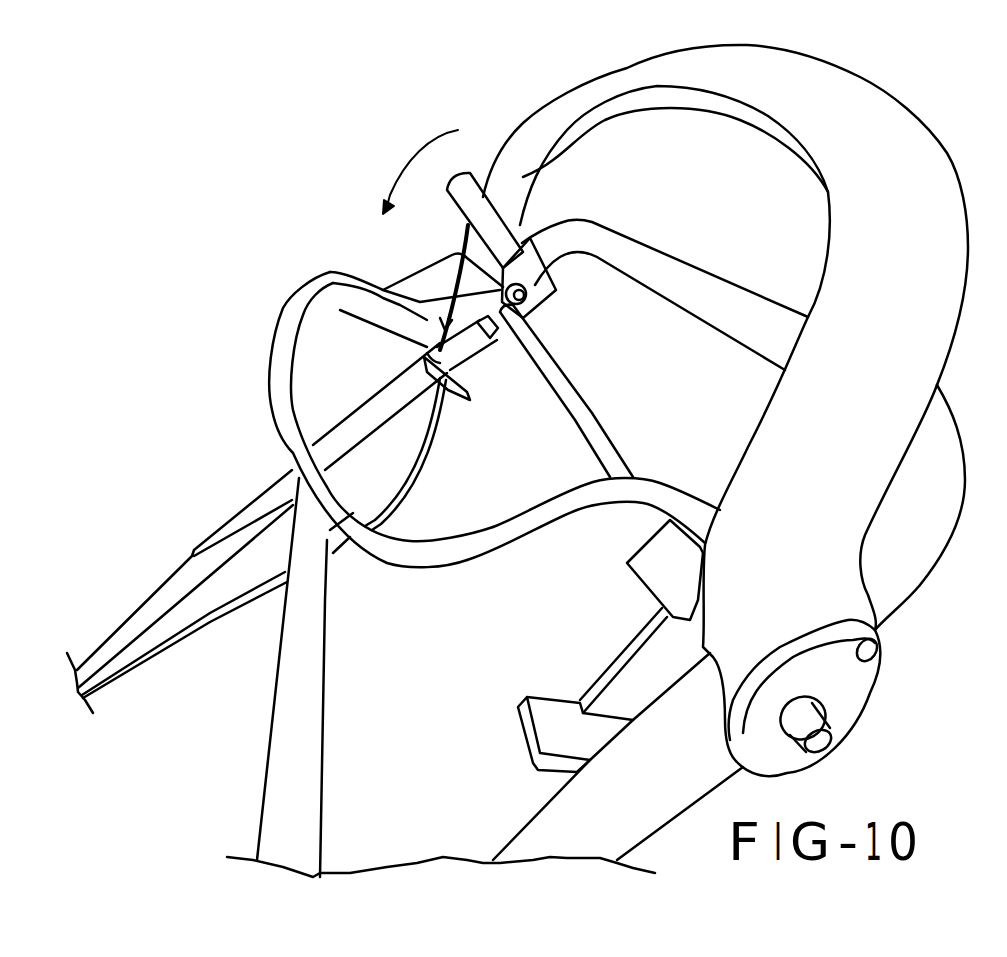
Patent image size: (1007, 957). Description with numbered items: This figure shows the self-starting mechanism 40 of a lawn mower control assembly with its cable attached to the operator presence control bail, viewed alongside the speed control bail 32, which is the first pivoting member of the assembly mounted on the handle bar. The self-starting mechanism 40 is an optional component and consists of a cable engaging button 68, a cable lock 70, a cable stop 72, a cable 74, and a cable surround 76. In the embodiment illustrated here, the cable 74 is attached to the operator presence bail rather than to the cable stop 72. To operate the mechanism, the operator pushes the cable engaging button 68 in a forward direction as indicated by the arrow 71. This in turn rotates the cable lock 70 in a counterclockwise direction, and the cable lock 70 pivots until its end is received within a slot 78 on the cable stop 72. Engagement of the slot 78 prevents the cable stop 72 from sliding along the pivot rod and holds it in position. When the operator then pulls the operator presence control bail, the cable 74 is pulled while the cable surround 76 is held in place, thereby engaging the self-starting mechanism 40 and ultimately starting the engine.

The speed control bail 32 is at (840, 88).
The self-starting mechanism 40 is at (325, 186).
The cable engaging button 68 is at (473, 178).
The cable lock 70 is at (440, 335).
The arrow 71 is at (403, 158).
The cable stop 72 is at (445, 390).
The cable 74 is at (447, 320).
The cable surround 76 is at (274, 580).
The slot 78 is at (430, 372).